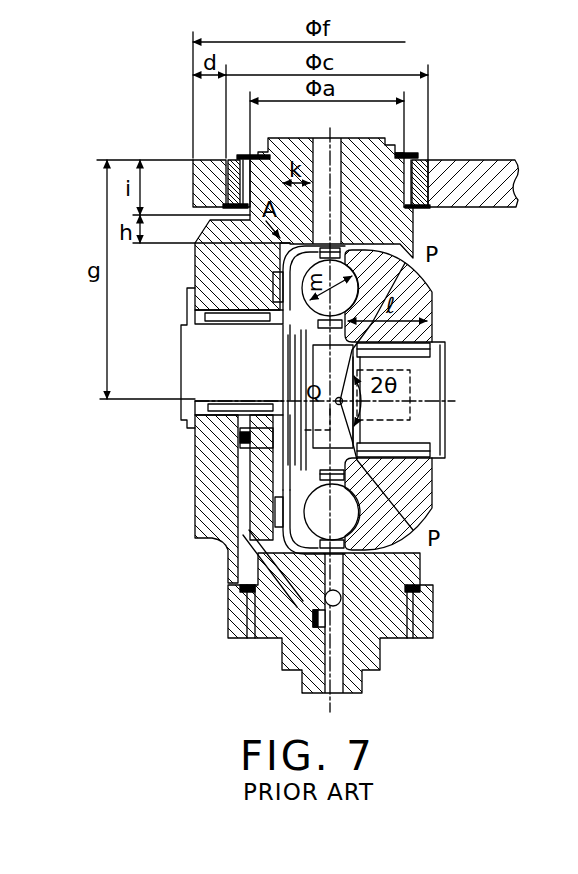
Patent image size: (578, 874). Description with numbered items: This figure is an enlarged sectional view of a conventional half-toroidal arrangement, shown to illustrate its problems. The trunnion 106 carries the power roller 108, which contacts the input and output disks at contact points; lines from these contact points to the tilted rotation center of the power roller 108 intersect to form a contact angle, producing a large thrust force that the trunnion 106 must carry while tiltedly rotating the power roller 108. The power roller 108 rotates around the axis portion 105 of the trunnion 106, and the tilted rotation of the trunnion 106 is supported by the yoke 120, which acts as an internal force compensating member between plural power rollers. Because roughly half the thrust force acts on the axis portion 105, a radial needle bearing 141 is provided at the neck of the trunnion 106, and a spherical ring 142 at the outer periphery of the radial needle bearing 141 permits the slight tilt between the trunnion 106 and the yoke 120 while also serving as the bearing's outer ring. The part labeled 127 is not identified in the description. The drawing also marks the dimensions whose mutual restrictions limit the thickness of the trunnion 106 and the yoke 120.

The axis portion 105 is at (362, 156).
The trunnion 106 is at (402, 650).
The power roller 108 is at (434, 297).
The yoke 120 is at (498, 172).
The snap ring 127 is at (277, 512).
The radial needle bearing 141 is at (228, 162).
The spherical ring 142 is at (430, 186).